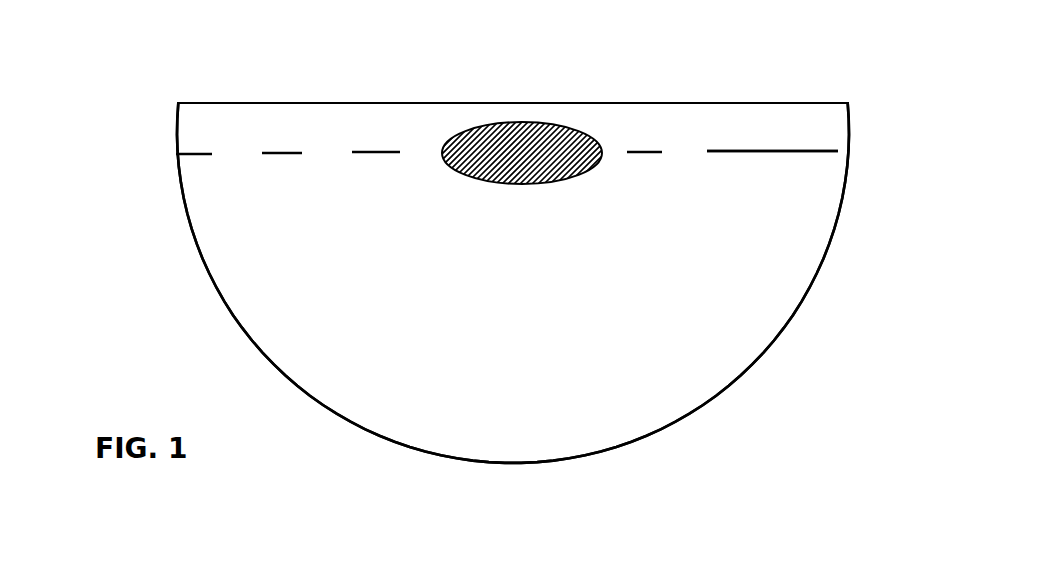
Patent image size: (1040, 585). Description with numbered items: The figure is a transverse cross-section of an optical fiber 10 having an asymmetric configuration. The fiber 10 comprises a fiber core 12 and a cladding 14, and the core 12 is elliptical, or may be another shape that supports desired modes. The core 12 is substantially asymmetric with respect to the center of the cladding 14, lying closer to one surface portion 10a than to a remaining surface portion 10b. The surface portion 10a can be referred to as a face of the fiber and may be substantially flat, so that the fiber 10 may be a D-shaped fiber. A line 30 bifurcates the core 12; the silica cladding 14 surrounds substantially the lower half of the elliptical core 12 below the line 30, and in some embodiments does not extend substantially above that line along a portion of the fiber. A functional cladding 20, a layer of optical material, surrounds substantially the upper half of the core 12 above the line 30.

The optical fiber 10 is at (180, 221).
The surface portion 10a is at (381, 96).
The remaining surface portion 10b is at (365, 432).
The fiber core 12 is at (470, 188).
The cladding 14 is at (588, 318).
The functional cladding 20 is at (185, 148).
The line 30 is at (856, 151).